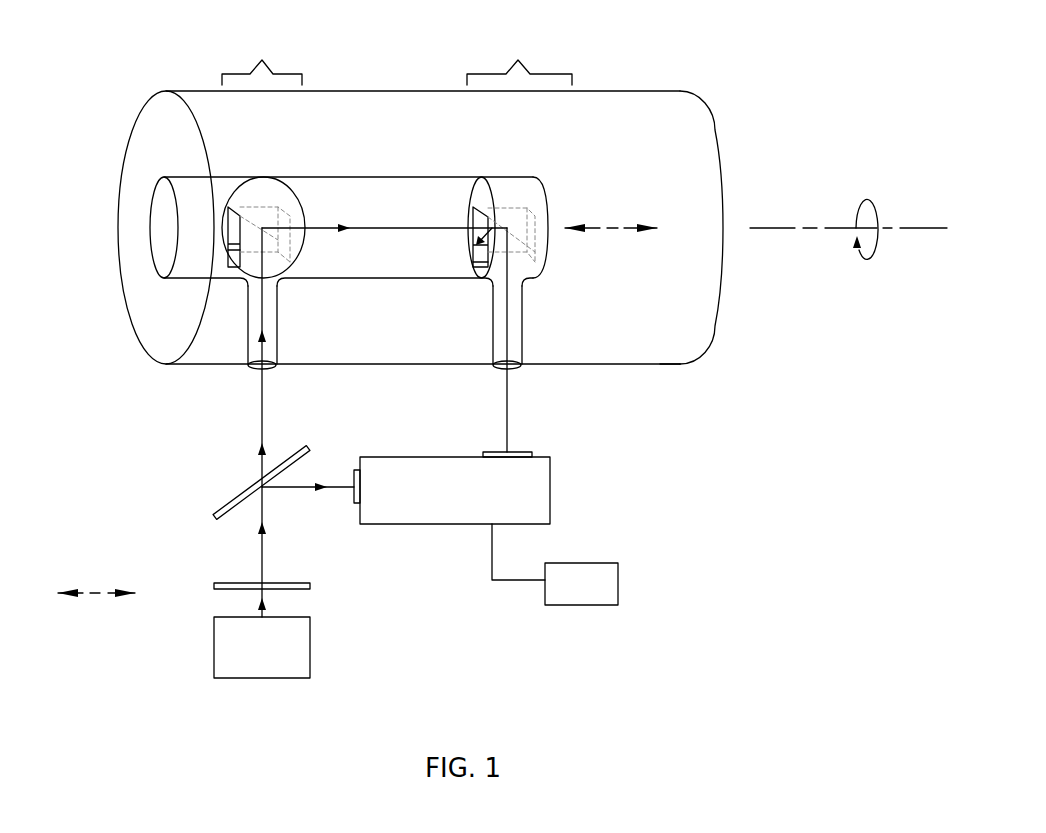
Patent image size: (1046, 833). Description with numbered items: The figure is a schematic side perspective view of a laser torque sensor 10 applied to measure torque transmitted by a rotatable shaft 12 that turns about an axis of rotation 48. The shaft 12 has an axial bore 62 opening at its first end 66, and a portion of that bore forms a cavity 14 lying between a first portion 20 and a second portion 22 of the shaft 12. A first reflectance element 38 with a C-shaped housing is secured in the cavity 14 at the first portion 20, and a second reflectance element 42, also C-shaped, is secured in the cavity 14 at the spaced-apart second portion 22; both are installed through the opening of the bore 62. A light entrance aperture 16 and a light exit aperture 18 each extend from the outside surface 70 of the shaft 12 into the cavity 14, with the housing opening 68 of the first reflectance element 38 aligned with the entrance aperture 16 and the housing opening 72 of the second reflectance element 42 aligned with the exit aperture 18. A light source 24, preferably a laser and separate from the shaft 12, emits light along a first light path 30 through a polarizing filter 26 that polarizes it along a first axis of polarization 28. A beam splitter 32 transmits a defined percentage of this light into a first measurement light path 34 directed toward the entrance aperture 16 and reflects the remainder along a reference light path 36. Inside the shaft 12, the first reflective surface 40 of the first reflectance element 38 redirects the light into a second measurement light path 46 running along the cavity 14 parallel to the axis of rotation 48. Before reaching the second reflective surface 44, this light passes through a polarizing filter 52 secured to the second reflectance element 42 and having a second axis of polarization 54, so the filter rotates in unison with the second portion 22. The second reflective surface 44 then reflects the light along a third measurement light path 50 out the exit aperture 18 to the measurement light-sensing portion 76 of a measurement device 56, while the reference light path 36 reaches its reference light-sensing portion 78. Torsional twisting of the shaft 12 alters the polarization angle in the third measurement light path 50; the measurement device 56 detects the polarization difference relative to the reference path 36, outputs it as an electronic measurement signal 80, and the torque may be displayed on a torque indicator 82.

The laser torque sensor 10 is at (768, 462).
The rotatable shaft 12 is at (420, 227).
The cavity 14 is at (349, 231).
The light entrance aperture 16 is at (258, 370).
The light exit aperture 18 is at (518, 367).
The first portion of the shaft 20 is at (264, 61).
The second portion of the shaft 22 is at (520, 61).
The light source 24 is at (262, 647).
The polarizing filter 26 is at (233, 582).
The first axis of polarization 28 is at (108, 595).
The first light path 30 is at (263, 615).
The beam splitter 32 is at (220, 505).
The first measurement light path 34 is at (260, 425).
The reference light path 36 is at (305, 487).
The first reflectance element 38 is at (238, 193).
The first reflective surface 40 is at (282, 222).
The second reflectance element 42 is at (480, 190).
The second reflective surface 44 is at (490, 218).
The second measurement light path 46 is at (387, 229).
The axis of rotation 48 is at (832, 228).
The third measurement light path 50 is at (507, 402).
The polarizing filter 52 is at (478, 240).
The second axis of polarization 54 is at (612, 228).
The measurement device 56 is at (455, 490).
The axial bore 62 is at (163, 232).
The first end of the shaft 66 is at (148, 130).
The opening of the first reflectance element housing 68 is at (237, 257).
The outside surface of the shaft 70 is at (640, 364).
The opening of the second reflectance element housing 72 is at (484, 262).
The measurement light-sensing portion 76 is at (520, 452).
The reference light-sensing portion 78 is at (354, 503).
The electronic measurement signal 80 is at (490, 561).
The torque indicator 82 is at (581, 584).